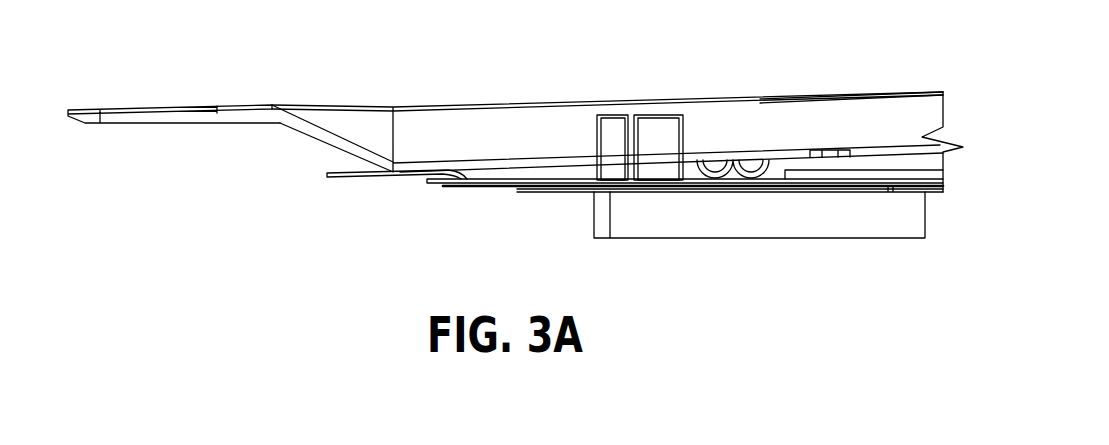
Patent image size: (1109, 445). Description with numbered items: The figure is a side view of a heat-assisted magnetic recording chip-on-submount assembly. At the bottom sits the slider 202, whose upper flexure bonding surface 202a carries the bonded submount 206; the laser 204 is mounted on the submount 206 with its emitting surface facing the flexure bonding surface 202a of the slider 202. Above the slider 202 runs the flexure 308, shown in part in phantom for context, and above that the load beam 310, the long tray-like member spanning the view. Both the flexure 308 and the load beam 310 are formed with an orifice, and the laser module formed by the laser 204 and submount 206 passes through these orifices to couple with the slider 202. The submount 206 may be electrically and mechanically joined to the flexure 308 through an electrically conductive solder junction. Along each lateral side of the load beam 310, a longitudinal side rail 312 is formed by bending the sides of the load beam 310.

The load beam 310 is at (474, 120).
The longitudinal side rail 312 is at (850, 108).
The laser 204 is at (610, 138).
The submount 206 is at (670, 138).
The flexure 308 is at (513, 189).
The slider 202 is at (897, 223).
The flexure bonding surface 202a is at (913, 194).